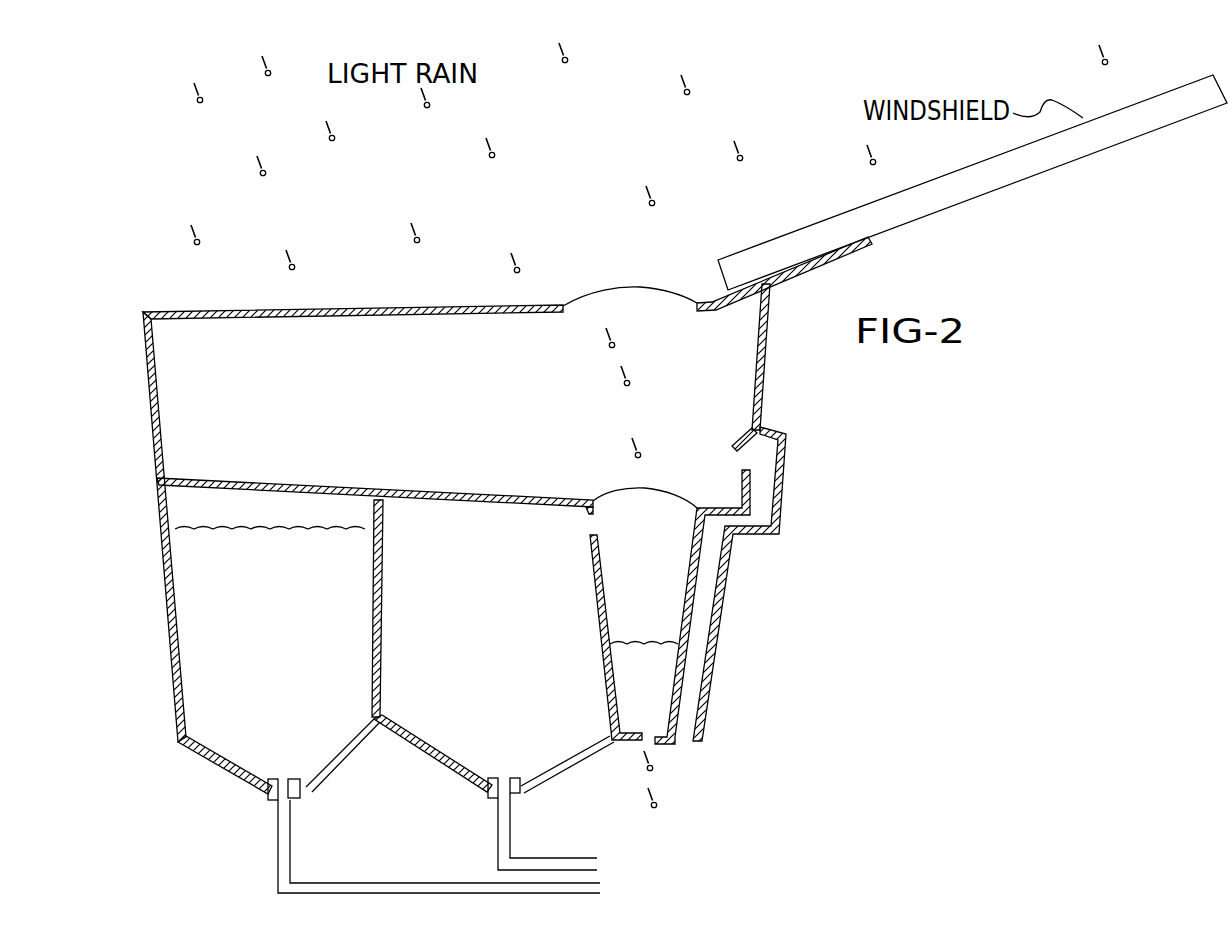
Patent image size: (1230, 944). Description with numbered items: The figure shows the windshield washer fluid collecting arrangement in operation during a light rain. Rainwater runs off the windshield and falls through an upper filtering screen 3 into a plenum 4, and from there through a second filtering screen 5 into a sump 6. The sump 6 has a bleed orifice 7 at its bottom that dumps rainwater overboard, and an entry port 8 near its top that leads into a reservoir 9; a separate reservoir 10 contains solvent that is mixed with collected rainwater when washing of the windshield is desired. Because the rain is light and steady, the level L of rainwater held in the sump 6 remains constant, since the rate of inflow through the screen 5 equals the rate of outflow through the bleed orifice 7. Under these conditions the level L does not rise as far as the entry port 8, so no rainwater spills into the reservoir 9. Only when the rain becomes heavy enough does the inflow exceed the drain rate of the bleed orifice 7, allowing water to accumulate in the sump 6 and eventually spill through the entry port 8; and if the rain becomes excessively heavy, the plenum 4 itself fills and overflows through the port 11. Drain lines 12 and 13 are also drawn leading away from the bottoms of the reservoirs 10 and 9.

The filtering screen 3 is at (632, 290).
The plenum 4 is at (444, 421).
The filtering screen 5 is at (615, 491).
The sump 6 is at (657, 614).
The bleed orifice 7 is at (678, 753).
The entry port 8 is at (580, 527).
The reservoir 9 is at (536, 644).
The reservoir 10 is at (292, 652).
The port 11 is at (722, 470).
The drain tube 12 is at (578, 897).
The drain tube 13 is at (572, 856).
The level L is at (596, 659).